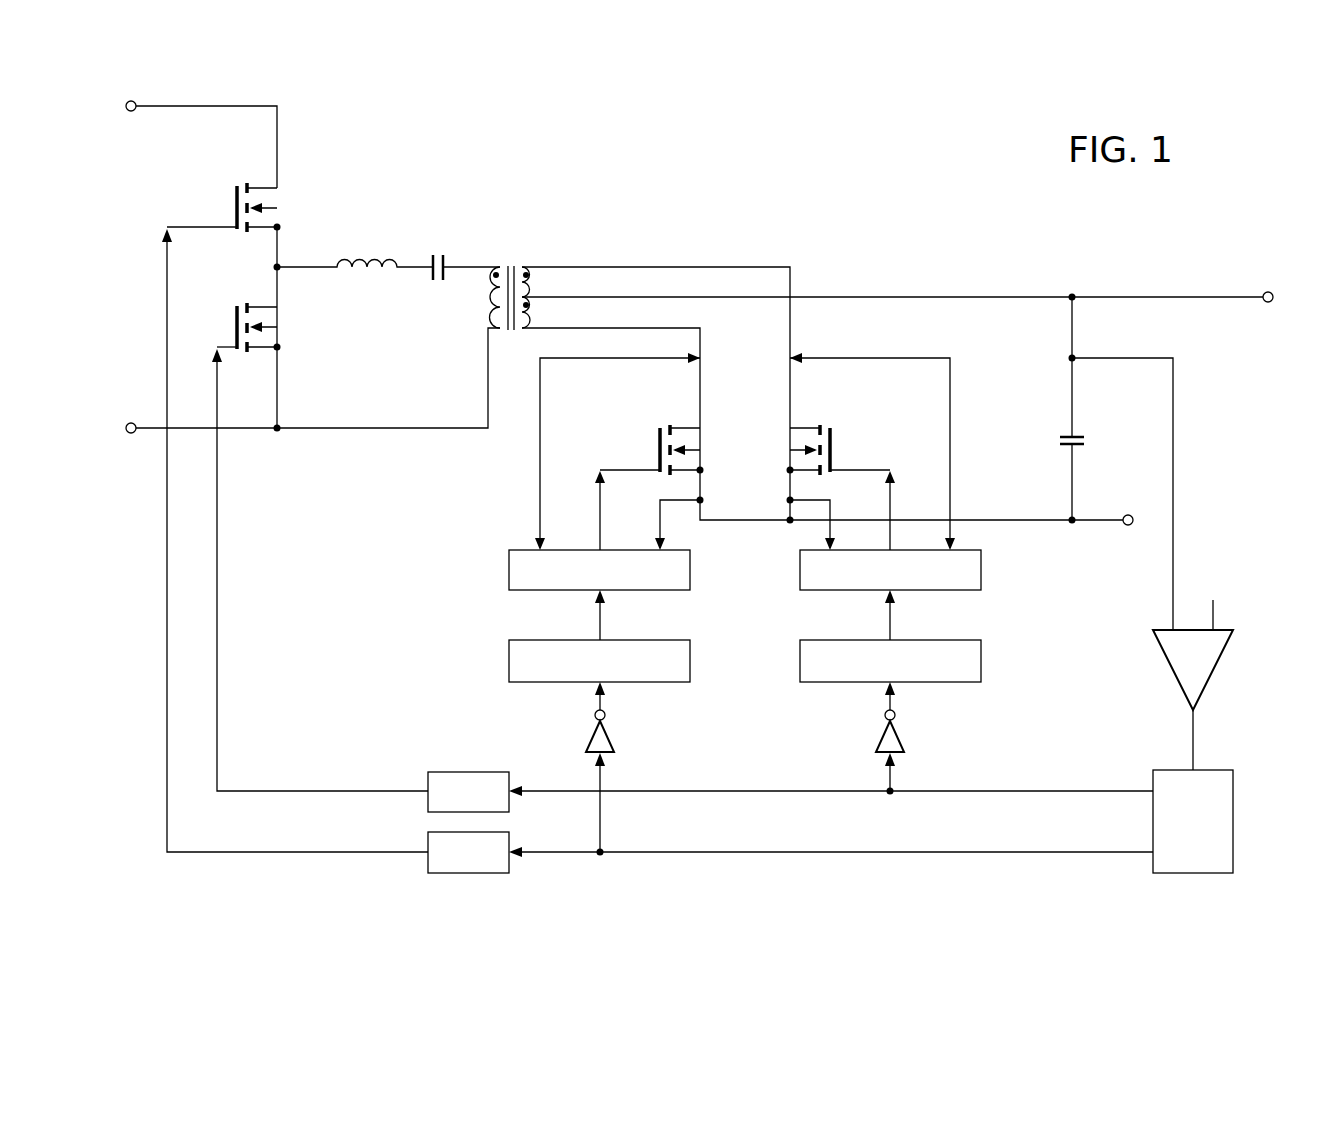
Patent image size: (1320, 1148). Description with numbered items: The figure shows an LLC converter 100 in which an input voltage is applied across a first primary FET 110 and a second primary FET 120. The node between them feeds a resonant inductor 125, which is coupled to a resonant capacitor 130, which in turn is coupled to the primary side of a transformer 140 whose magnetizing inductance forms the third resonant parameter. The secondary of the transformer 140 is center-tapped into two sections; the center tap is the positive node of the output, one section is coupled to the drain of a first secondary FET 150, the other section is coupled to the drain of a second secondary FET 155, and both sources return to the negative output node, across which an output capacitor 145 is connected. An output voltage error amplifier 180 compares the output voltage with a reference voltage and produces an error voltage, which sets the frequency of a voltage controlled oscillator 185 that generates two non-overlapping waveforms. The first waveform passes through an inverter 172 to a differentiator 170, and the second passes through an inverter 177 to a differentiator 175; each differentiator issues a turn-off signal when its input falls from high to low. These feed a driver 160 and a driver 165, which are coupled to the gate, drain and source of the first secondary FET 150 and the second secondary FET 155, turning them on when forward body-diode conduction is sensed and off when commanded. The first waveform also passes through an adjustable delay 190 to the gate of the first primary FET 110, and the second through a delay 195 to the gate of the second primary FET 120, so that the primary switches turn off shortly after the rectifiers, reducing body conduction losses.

The LLC converter 100 is at (1100, 232).
The first primary FET 110 is at (236, 192).
The second primary FET 120 is at (236, 312).
The resonant inductor 125 is at (366, 254).
The resonant capacitor 130 is at (436, 254).
The transformer 140 is at (508, 266).
The output capacitor 145 is at (1059, 441).
The first secondary FET 150 is at (659, 432).
The second secondary FET 155 is at (830, 432).
The driver 160 is at (509, 570).
The driver 165 is at (981, 570).
The differentiator 170 is at (509, 660).
The differentiator 175 is at (981, 660).
The inverter 172 is at (585, 739).
The inverter 177 is at (905, 739).
The output voltage error amplifier 180 is at (1218, 676).
The voltage controlled oscillator 185 is at (1233, 822).
The delay 190 is at (465, 874).
The delay 195 is at (465, 772).